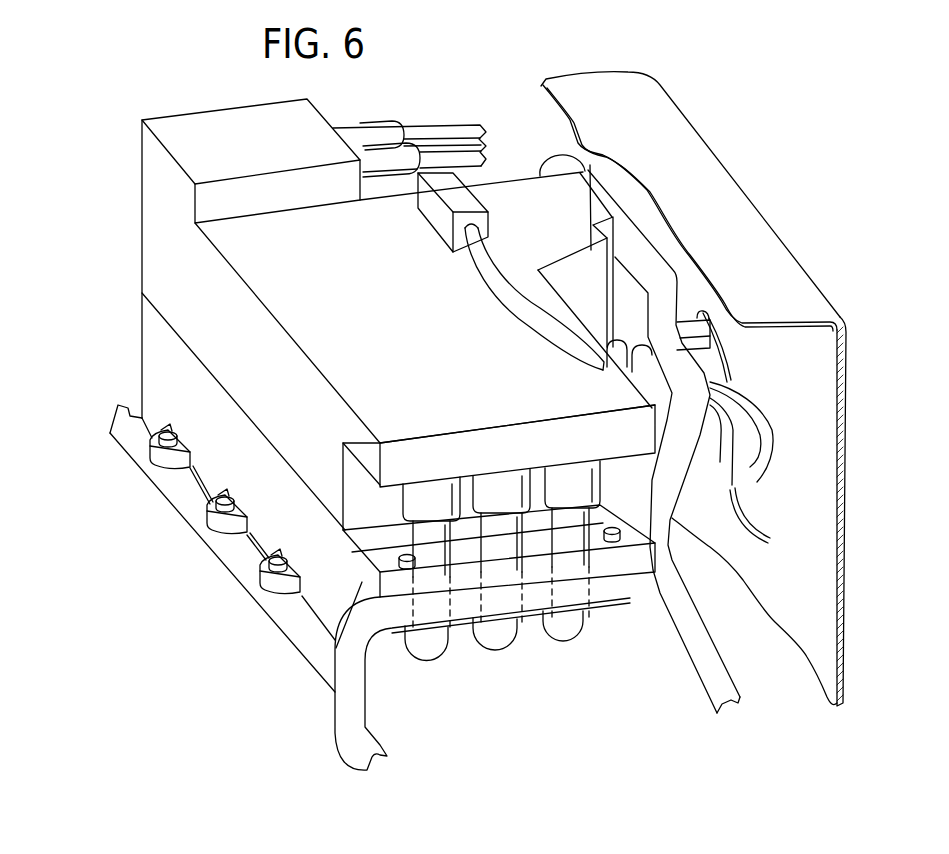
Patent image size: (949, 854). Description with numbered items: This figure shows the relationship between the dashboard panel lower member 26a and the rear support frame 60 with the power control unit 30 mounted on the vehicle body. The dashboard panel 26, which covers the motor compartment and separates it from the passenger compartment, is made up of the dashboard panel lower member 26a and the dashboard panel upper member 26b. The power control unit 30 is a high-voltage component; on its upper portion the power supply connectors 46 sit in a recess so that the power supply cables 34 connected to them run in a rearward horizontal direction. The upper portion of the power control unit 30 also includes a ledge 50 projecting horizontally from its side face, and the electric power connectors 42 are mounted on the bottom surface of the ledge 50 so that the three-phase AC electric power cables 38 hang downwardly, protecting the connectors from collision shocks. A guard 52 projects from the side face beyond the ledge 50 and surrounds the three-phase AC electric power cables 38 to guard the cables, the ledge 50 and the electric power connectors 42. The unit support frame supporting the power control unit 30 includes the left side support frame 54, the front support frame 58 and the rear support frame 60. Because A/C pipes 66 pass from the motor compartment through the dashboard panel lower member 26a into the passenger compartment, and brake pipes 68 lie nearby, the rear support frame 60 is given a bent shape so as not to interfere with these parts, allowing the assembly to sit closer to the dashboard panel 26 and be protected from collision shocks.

The dashboard panel 26 is at (849, 421).
The dashboard panel lower member 26a is at (849, 491).
The dashboard panel upper member 26b is at (767, 235).
The power control unit 30 is at (162, 226).
The power supply cables 34 is at (455, 157).
The three-phase AC electric power cables 38 is at (560, 637).
The electric power connectors 42 is at (557, 480).
The power supply connectors 46 is at (367, 152).
The ledge 50 is at (362, 440).
The guard 52 is at (393, 585).
The left side support frame 54 is at (616, 590).
The front support frame 58 is at (305, 639).
The rear support frame 60 is at (632, 255).
The A/C pipes 66 is at (704, 313).
The brake pipes 68 is at (735, 442).